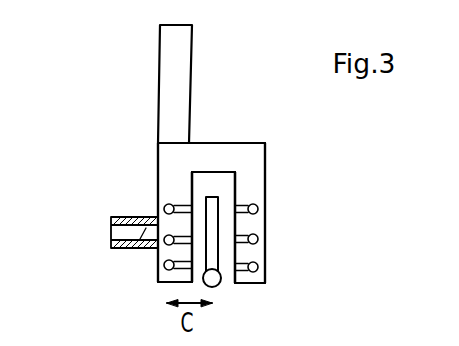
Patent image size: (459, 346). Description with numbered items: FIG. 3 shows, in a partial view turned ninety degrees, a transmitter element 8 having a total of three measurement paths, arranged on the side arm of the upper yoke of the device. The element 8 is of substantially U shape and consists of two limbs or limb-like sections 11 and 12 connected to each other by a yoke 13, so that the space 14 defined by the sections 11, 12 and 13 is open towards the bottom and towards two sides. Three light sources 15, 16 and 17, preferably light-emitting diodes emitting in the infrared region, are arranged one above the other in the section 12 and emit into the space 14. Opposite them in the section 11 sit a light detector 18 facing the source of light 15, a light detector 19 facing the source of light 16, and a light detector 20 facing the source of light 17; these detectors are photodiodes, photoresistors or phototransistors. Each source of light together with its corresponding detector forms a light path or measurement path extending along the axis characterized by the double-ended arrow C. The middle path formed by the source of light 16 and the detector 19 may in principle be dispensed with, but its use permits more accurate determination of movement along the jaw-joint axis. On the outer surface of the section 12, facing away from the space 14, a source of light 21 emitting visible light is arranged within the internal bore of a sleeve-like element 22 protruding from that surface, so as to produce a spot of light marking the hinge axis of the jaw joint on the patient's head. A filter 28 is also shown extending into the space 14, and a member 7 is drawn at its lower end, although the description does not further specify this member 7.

The ball-shaped actuating member 7 is at (216, 285).
The element 8 is at (255, 167).
The limb-like section 11 is at (257, 283).
The limb-like section 12 is at (156, 256).
The yoke 13 is at (210, 153).
The space 14 is at (203, 182).
The light source 15 is at (166, 206).
The light source 16 is at (166, 236).
The light source 17 is at (164, 267).
The light detector 18 is at (258, 208).
The light detector 19 is at (258, 239).
The light detector 20 is at (258, 267).
The source of light 21 is at (145, 236).
The sleeve-like element 22 is at (111, 218).
The filter 28 is at (213, 197).